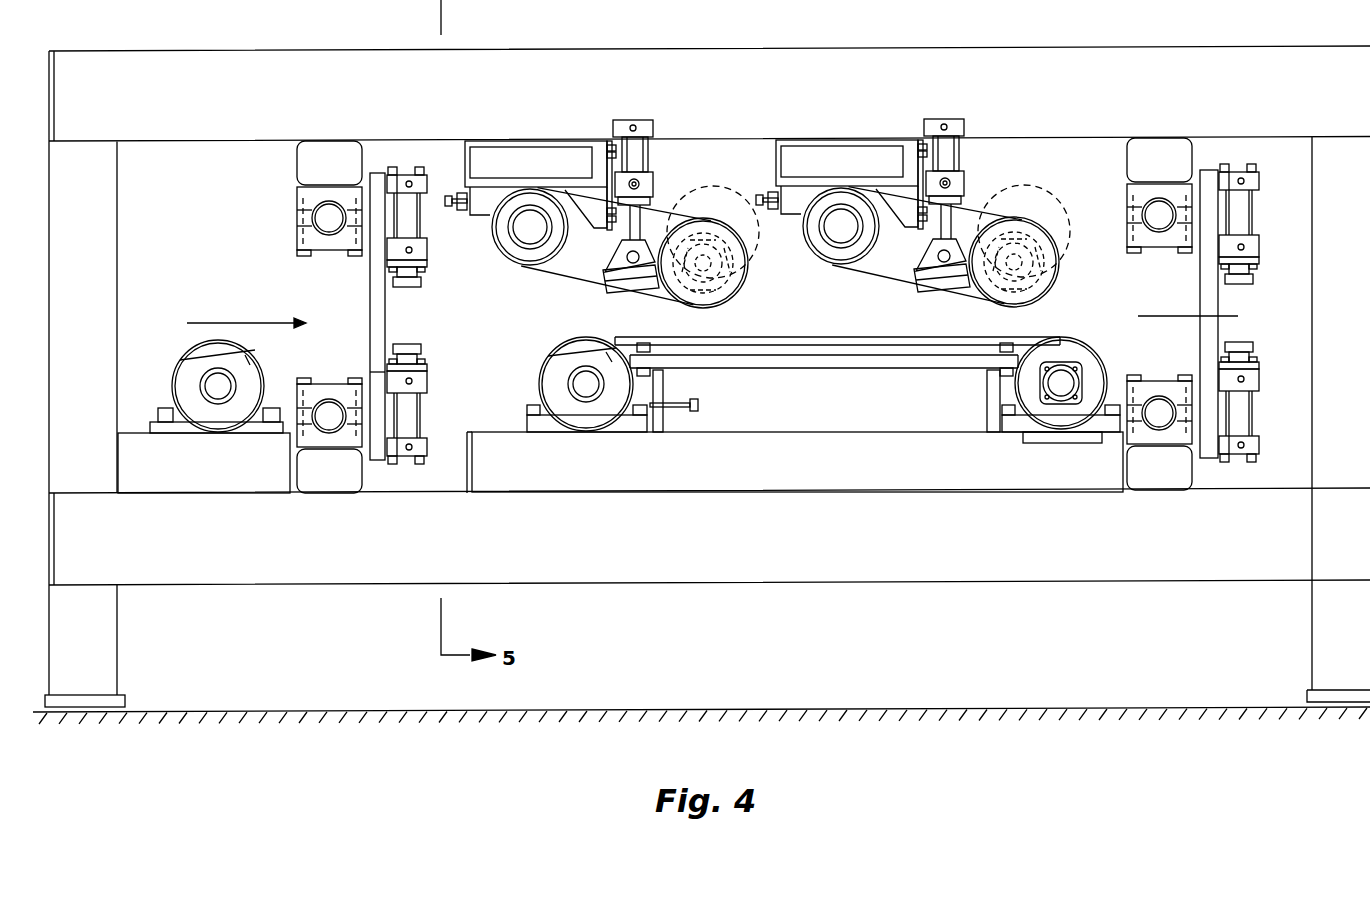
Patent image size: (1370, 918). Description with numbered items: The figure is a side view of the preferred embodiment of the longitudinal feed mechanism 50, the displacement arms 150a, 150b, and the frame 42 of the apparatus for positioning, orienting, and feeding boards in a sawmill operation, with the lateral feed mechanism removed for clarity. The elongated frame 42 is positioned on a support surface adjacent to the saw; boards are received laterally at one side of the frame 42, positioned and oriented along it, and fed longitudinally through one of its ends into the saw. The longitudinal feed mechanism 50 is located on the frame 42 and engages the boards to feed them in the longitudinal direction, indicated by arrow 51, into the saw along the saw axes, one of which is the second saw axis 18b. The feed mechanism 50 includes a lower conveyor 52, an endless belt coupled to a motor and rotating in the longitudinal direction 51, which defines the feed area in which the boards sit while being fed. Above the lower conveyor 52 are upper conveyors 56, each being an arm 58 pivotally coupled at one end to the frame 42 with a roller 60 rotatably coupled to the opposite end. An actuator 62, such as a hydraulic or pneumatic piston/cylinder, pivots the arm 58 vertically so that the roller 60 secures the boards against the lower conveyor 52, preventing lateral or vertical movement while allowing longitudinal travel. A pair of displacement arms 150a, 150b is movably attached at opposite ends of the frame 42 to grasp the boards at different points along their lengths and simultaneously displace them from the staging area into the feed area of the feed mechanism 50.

The frame 42 is at (227, 556).
The longitudinal feed mechanism 50 is at (1060, 304).
The longitudinal direction 51 is at (239, 322).
The lower conveyor 52 is at (828, 338).
The upper conveyor 56 is at (490, 256).
The arm 58 is at (560, 282).
The roller 60 is at (758, 278).
The actuator 62 is at (650, 149).
The displacement arm 150a is at (368, 297).
The displacement arm 150b is at (1200, 285).
The second saw axis 18b is at (1232, 316).